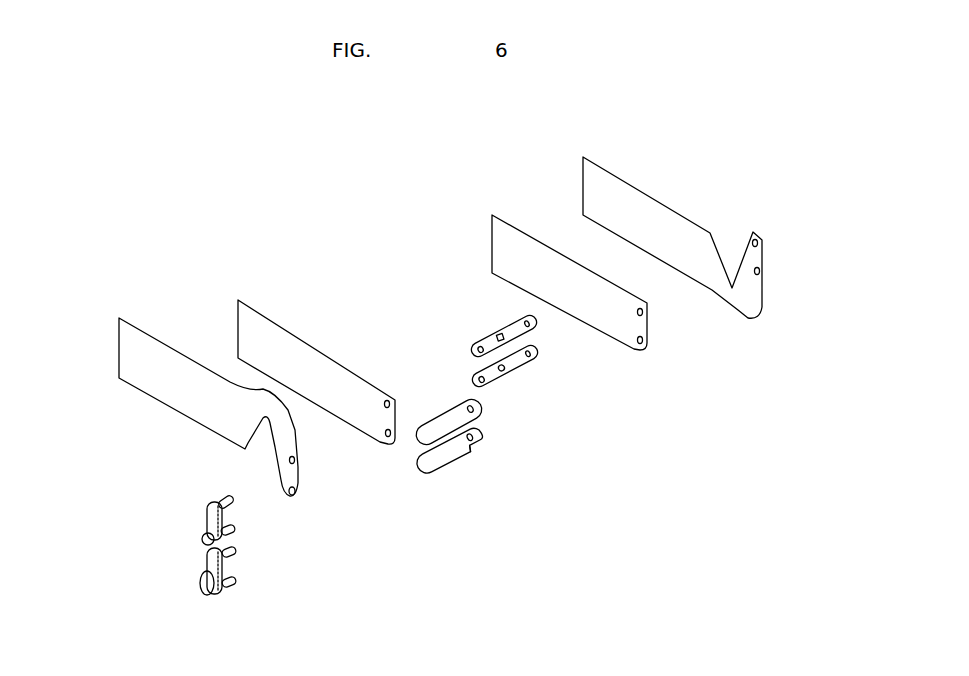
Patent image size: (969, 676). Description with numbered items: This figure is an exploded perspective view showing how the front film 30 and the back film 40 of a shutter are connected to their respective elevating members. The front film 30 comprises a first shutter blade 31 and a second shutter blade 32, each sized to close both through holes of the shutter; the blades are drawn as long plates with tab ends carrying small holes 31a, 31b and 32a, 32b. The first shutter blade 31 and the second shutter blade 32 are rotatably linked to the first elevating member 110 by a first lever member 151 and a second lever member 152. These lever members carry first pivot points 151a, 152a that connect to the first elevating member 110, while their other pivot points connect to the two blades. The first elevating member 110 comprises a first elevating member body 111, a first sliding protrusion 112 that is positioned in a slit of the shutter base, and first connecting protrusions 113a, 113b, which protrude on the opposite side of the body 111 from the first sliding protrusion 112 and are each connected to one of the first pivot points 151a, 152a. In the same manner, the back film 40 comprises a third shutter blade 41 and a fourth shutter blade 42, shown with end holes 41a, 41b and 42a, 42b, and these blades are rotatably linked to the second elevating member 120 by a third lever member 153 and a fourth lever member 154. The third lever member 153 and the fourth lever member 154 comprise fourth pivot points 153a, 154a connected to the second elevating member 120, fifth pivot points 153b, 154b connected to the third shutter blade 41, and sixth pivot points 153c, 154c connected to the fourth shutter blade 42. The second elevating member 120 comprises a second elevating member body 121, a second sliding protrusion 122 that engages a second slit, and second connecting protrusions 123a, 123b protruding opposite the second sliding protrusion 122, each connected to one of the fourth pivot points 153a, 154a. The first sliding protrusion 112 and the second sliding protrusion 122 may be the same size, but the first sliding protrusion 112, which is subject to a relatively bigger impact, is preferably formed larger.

The front film 30 is at (527, 142).
The first shutter blade 31 is at (585, 188).
The coupling hole 31a is at (760, 271).
The coupling hole 31b is at (758, 243).
The second shutter blade 32 is at (532, 243).
The coupling hole 32a is at (643, 340).
The coupling hole 32b is at (643, 312).
The back film 40 is at (217, 242).
The third shutter blade 41 is at (153, 340).
The coupling hole 41a is at (295, 491).
The coupling hole 41b is at (295, 461).
The fourth shutter blade 42 is at (262, 315).
The coupling hole 42a is at (380, 425).
The coupling hole 42b is at (388, 400).
The first elevating member 110 is at (328, 552).
The first elevating member body 111 is at (220, 565).
The first sliding protrusion 112 is at (210, 596).
The first connecting protrusion 113a is at (236, 585).
The first connecting protrusion 113b is at (236, 551).
The second elevating member 120 is at (117, 463).
The second elevating member body 121 is at (207, 513).
The second sliding protrusion 122 is at (204, 542).
The second connecting protrusion 123a is at (222, 530).
The second connecting protrusion 123b is at (225, 500).
The first lever member 151 is at (485, 470).
The first pivot point 151a is at (478, 448).
The second lever member 152 is at (485, 453).
The first pivot point 152a is at (480, 420).
The third lever member 153 is at (453, 305).
The fourth pivot point 153a is at (512, 313).
The fifth pivot point 153b is at (493, 338).
The sixth pivot point 153c is at (476, 352).
The fourth lever member 154 is at (559, 386).
The fourth pivot point 154a is at (535, 352).
The fifth pivot point 154b is at (508, 377).
The sixth pivot point 154c is at (495, 385).